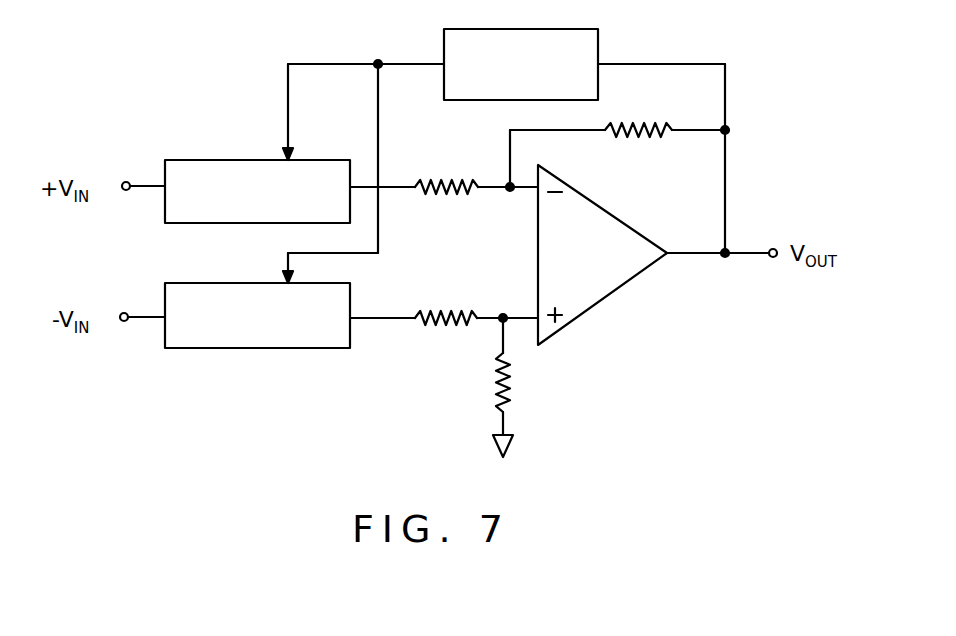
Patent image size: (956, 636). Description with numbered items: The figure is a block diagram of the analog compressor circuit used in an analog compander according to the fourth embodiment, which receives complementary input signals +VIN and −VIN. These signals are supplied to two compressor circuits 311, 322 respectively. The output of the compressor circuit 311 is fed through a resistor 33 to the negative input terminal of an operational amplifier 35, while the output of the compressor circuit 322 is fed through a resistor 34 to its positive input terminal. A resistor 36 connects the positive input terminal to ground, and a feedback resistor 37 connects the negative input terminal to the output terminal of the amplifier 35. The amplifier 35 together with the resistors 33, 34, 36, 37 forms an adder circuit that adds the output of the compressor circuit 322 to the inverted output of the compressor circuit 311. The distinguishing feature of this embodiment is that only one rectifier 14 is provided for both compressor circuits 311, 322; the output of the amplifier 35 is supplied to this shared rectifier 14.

The rectifier 14 is at (540, 27).
The compressor circuit 311 is at (229, 158).
The compressor circuit 322 is at (267, 350).
The resistor 33 is at (426, 181).
The resistor 34 is at (454, 307).
The operational amplifier 35 is at (610, 280).
The resistor 36 is at (493, 384).
The feedback resistor 37 is at (620, 140).